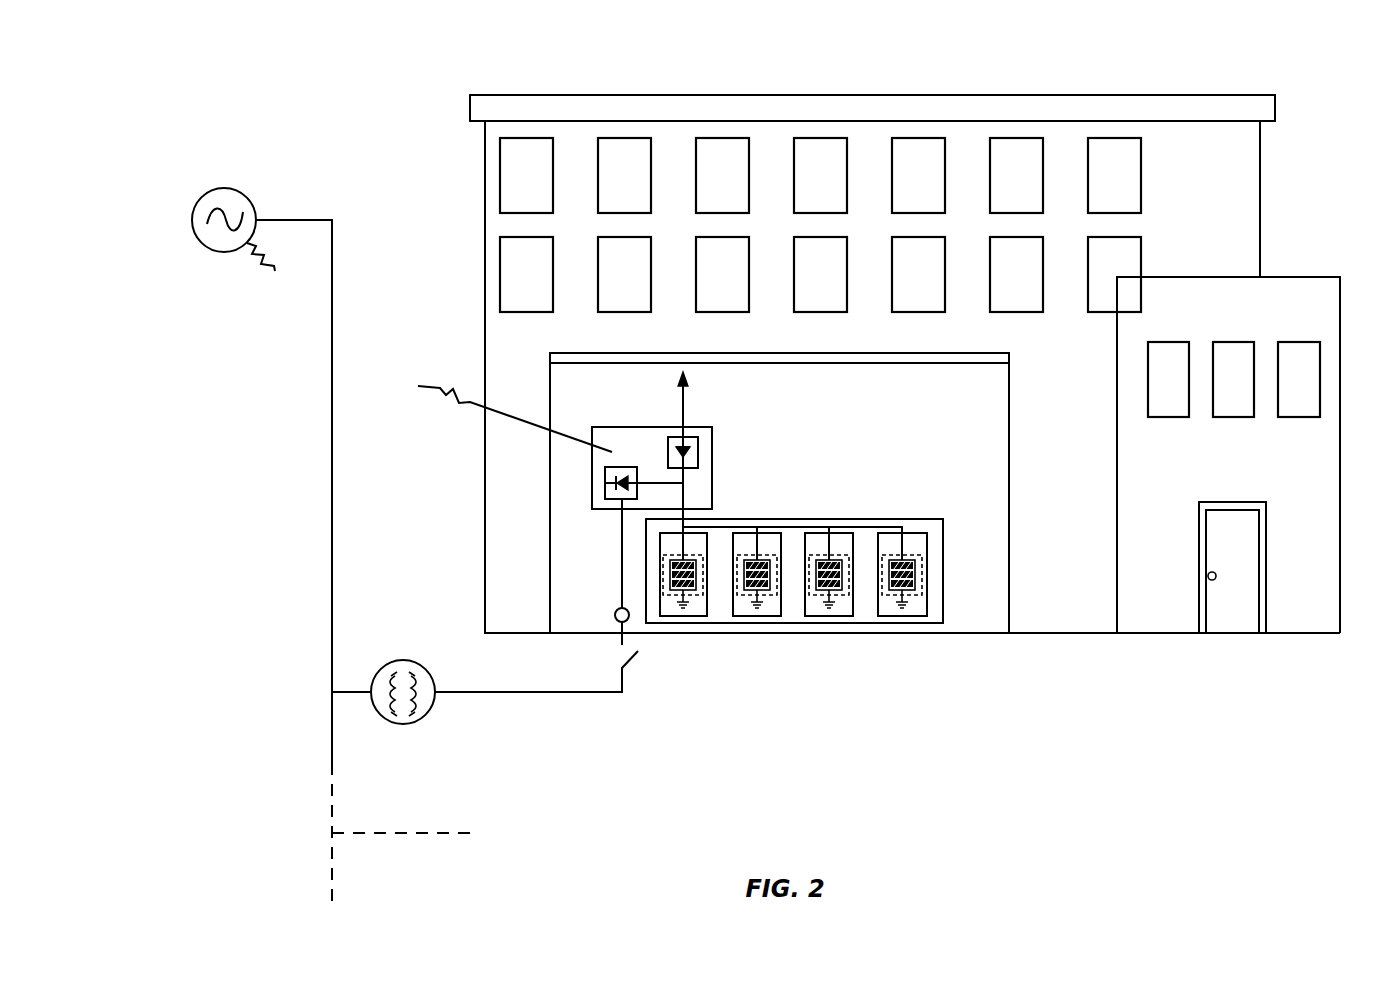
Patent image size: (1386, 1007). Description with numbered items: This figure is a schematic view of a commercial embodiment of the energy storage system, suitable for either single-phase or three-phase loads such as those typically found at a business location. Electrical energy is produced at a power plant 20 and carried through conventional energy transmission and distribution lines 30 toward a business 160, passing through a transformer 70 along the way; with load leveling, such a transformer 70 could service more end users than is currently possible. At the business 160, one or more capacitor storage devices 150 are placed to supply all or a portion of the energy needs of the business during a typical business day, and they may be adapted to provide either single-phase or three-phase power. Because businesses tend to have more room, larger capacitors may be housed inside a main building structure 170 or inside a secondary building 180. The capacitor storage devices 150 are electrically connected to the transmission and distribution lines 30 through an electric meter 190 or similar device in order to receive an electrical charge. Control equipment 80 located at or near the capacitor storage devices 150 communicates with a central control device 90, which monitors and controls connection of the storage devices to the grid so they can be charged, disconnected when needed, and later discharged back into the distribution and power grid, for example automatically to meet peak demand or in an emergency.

The power plant 20 is at (210, 190).
The central control device 90 is at (290, 282).
The energy transmission and distribution lines 30 is at (330, 497).
The transformer 70 is at (428, 715).
The business 160 is at (445, 108).
The main building structure 170 is at (1242, 188).
The secondary building 180 is at (989, 611).
The control equipment 80 is at (416, 383).
The electric meter 190 is at (628, 620).
The capacitor storage devices 150 is at (822, 643).